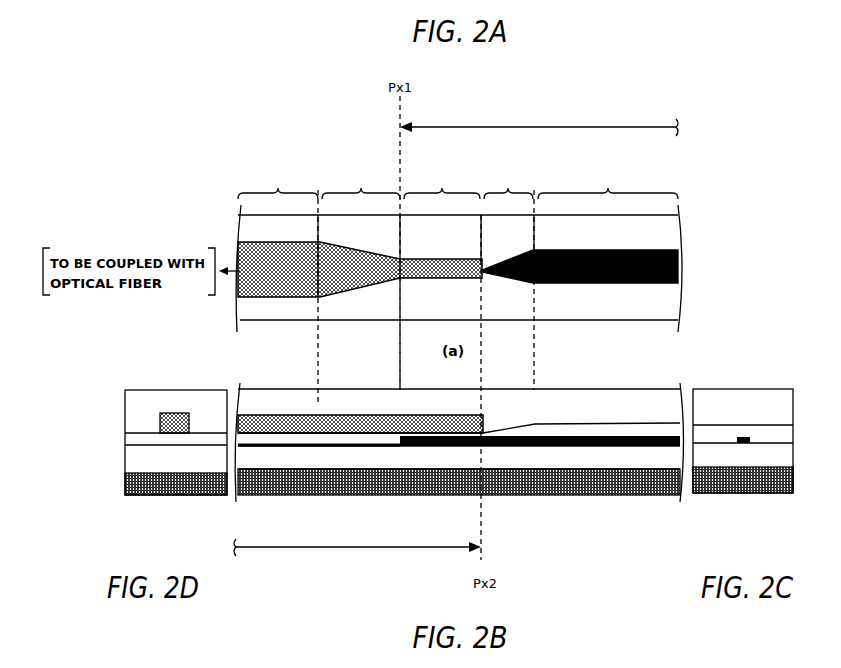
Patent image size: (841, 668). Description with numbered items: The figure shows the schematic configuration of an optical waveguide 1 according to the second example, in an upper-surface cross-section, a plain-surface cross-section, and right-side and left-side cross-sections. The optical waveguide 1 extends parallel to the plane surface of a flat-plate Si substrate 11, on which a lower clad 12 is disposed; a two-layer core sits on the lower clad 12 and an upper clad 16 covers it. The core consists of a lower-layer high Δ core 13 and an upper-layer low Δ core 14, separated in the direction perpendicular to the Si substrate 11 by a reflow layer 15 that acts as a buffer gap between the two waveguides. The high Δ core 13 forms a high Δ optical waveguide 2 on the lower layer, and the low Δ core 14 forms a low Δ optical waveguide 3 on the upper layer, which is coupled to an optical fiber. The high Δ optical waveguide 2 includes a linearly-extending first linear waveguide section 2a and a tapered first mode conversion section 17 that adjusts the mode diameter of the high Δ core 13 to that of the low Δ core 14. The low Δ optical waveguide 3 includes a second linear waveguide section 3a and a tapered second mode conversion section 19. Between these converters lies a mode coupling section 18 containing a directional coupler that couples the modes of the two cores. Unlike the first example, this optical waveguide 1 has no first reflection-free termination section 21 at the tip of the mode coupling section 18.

In FIG. 2A, the optical waveguide 1 is at (254, 99).
In FIG. 2A, the high Δ optical waveguide 2 is at (533, 128).
In FIG. 2C, the high Δ optical waveguide 2 is at (747, 362).
In FIG. 2B, the low Δ optical waveguide 3 is at (363, 550).
In FIG. 2D, the low Δ optical waveguide 3 is at (156, 370).
In FIG. 2A, the second linear waveguide section 3a is at (278, 185).
In FIG. 2A, the second mode conversion section 19 is at (361, 185).
In FIG. 2A, the mode coupling section 18 is at (442, 185).
In FIG. 2A, the first mode conversion section 17 is at (508, 185).
In FIG. 2A, the first linear waveguide section 2a is at (608, 182).
In FIG. 2A, the low Δ core 14 is at (255, 292).
In FIG. 2B, the low Δ core 14 is at (360, 424).
In FIG. 2A, the high Δ core 13 is at (592, 283).
In FIG. 2B, the high Δ core 13 is at (583, 437).
In FIG. 2A, the first reflection-free termination section 21 is at (389, 335).
In FIG. 2B, the reflow layer 15 is at (570, 433).
In FIG. 2B, the upper clad 16 is at (638, 407).
In FIG. 2B, the lower clad 12 is at (622, 460).
In FIG. 2B, the Si substrate 11 is at (628, 493).